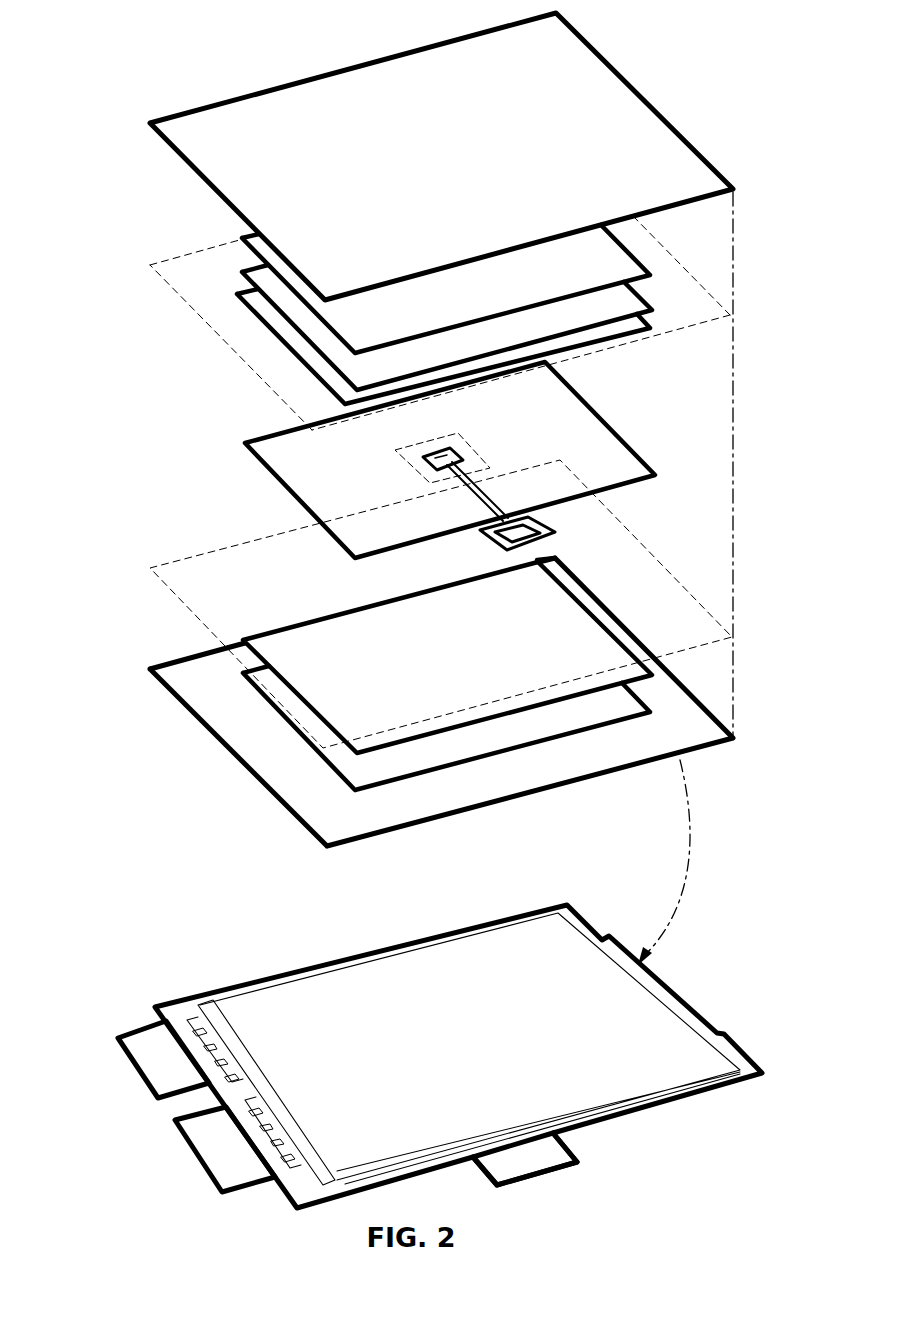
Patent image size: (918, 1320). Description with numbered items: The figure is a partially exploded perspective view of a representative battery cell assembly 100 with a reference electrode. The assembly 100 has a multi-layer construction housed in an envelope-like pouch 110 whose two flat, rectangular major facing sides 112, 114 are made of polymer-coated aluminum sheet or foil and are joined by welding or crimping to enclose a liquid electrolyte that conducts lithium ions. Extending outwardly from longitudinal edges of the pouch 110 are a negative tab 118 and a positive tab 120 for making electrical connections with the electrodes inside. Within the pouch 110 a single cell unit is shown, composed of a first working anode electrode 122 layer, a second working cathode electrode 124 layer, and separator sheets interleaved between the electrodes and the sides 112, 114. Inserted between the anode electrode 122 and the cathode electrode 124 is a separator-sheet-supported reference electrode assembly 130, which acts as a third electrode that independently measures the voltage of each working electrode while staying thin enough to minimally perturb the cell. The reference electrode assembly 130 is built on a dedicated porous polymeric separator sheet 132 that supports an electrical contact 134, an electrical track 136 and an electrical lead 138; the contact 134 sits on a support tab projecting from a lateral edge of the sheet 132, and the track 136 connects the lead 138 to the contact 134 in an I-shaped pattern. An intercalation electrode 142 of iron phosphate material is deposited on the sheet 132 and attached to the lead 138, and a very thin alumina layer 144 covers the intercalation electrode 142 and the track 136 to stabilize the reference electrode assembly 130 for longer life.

The battery cell assembly 100 is at (405, 1040).
The pouch 110 is at (320, 998).
The major facing side 112 is at (174, 122).
The major facing side 114 is at (287, 808).
The negative tab 118 is at (150, 1045).
The positive tab 120 is at (205, 1130).
The first working (anode) electrode 122 is at (283, 323).
The second working (cathode) electrode 124 is at (273, 670).
The reference electrode assembly 130 is at (407, 460).
The separator sheet 132 is at (253, 455).
The electrical contact 134 is at (555, 530).
The electrical track 136 is at (495, 527).
The electrical lead 138 is at (463, 452).
The intercalation electrode 142 is at (425, 462).
The alumina layer 144 is at (410, 445).